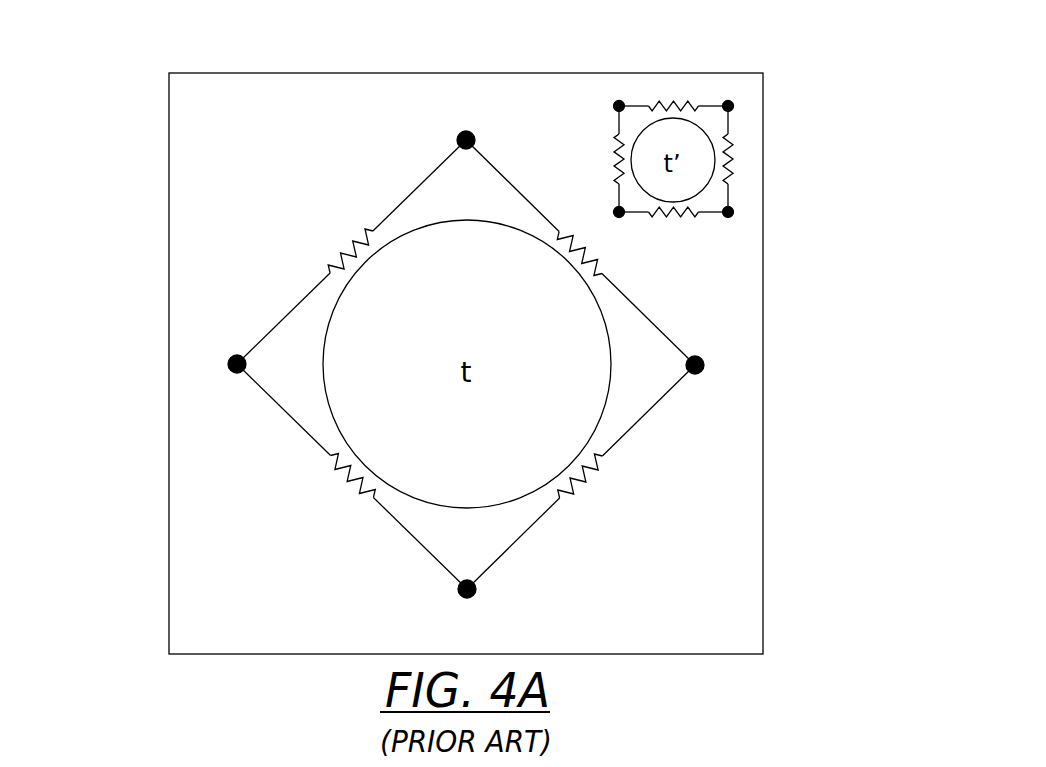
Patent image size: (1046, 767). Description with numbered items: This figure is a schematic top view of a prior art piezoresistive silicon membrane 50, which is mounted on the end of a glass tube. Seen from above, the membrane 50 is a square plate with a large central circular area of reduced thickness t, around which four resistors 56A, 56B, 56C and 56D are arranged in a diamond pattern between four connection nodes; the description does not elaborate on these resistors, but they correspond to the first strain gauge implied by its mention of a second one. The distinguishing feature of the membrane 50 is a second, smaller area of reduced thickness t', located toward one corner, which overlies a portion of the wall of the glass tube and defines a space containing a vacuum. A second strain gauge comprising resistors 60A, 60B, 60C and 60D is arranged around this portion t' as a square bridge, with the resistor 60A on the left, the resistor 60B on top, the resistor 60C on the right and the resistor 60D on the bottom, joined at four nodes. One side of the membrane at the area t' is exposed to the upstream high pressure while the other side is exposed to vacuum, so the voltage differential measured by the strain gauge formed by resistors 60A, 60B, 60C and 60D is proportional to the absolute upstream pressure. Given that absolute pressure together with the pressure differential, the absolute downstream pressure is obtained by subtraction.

The piezoresistive silicon membrane 50 is at (252, 162).
The piezoresistive element 56'A (top-left) 56A is at (345, 250).
The piezoresistive element 56'B (top-right) 56B is at (602, 268).
The piezoresistive element 56'C (bottom-right) 56C is at (580, 489).
The piezoresistive element 56'D (bottom-left) 56D is at (357, 483).
The resistor 60A is at (615, 138).
The resistor 60B is at (683, 105).
The resistor 60C is at (732, 160).
The resistor 60D is at (695, 217).